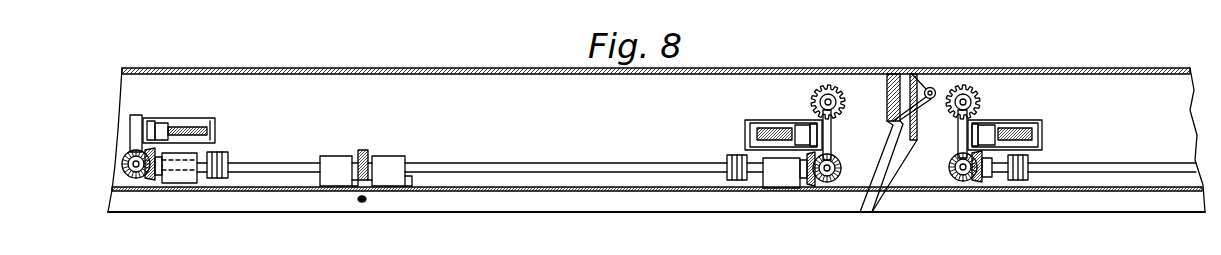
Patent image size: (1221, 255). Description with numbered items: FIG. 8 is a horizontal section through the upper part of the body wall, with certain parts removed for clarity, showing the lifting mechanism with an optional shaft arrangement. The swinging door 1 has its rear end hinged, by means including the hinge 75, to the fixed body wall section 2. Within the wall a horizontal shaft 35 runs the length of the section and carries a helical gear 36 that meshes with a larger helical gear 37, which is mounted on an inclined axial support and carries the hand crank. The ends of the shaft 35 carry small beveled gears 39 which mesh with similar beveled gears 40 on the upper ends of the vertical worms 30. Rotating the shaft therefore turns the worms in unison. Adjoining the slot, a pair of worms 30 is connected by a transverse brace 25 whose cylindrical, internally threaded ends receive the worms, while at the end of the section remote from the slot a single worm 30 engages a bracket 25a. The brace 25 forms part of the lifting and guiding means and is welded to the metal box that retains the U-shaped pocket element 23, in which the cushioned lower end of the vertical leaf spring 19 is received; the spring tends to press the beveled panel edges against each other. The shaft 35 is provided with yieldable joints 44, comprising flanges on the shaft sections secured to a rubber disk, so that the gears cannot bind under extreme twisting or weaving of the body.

The swinging door 1 is at (557, 210).
The fixed body wall section 2 is at (1115, 203).
The leaf spring 19 is at (193, 127).
The pocket element 23 is at (180, 112).
The transverse brace 25 is at (831, 132).
The bracket 25a is at (135, 115).
The worm 30 is at (115, 172).
The horizontal shaft 35 is at (285, 163).
The helical gear 36 is at (367, 150).
The larger helical gear 37 is at (415, 178).
The small beveled gear 39 is at (153, 190).
The beveled gear 40 is at (120, 165).
The yieldable joint 44 is at (217, 152).
The hinge 75 is at (935, 88).